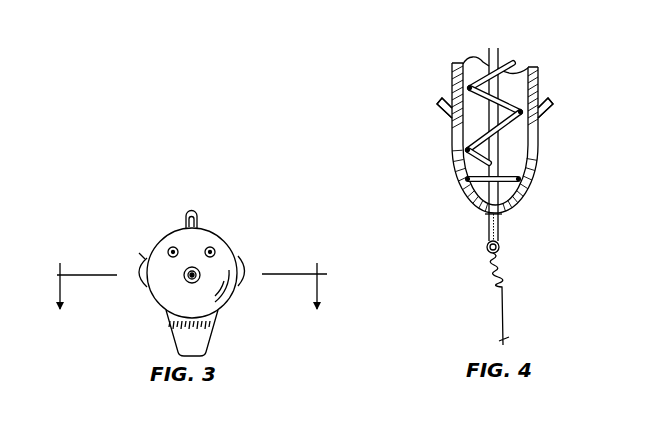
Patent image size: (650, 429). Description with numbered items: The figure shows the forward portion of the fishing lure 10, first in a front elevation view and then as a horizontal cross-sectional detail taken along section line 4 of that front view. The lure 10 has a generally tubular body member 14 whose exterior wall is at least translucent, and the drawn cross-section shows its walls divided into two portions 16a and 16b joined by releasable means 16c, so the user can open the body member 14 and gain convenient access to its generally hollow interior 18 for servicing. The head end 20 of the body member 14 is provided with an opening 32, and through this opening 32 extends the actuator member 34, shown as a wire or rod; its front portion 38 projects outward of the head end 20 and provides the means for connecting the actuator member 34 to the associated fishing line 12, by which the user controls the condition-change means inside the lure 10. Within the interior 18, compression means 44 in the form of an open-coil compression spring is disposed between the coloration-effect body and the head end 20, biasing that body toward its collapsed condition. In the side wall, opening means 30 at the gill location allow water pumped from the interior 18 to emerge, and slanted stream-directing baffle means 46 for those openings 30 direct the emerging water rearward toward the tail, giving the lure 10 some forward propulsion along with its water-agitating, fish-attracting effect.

In FIG. 3, the fishing lure 10 is at (235, 228).
In FIG. 4, the fishing lure 10 is at (564, 67).
In FIG. 4, the fishing line 12 is at (504, 318).
In FIG. 3, the body member 14 is at (211, 224).
In FIG. 4, the body member 14 is at (542, 83).
In FIG. 4, the wall portion 16a is at (453, 160).
In FIG. 4, the wall portion 16b is at (453, 128).
In FIG. 4, the releasable means 16c is at (452, 142).
In FIG. 4, the hollow interior 18 is at (520, 166).
In FIG. 3, the head end 20 is at (231, 255).
In FIG. 4, the head end 20 is at (533, 196).
In FIG. 4, the opening means 30 is at (449, 102).
In FIG. 3, the opening 32 is at (186, 274).
In FIG. 4, the opening 32 is at (484, 216).
In FIG. 3, the actuator member 34 is at (188, 281).
In FIG. 4, the actuator member 34 is at (487, 238).
In FIG. 4, the front portion of the actuator member 38 is at (500, 247).
In FIG. 4, the compression means 44 is at (481, 62).
In FIG. 3, the stream-directing baffle means 46 is at (141, 268).
In FIG. 4, the stream-directing baffle means 46 is at (442, 114).
In FIG. 3, the section line 4- 4 is at (186, 282).